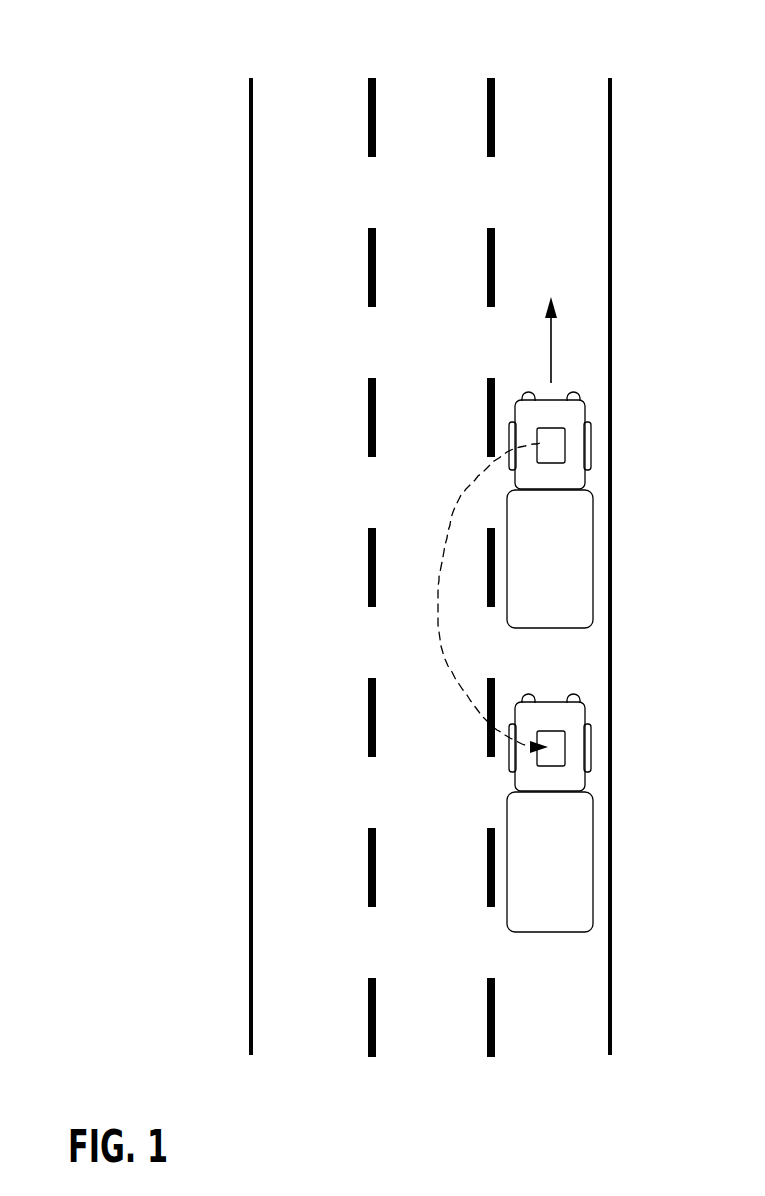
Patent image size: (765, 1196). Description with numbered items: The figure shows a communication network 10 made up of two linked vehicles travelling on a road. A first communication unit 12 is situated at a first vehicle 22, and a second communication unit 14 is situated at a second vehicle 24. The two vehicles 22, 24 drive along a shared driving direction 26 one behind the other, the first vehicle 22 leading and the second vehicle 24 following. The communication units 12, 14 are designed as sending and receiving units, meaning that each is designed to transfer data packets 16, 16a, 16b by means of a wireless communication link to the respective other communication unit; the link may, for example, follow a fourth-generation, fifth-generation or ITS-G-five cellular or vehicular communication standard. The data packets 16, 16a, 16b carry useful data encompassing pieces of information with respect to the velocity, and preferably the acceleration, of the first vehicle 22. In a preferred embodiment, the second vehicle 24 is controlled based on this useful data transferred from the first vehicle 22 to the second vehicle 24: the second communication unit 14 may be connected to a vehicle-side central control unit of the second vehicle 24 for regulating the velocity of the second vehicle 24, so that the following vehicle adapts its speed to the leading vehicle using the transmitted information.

The communication network 10 is at (149, 93).
The first communication unit 12 is at (558, 437).
The second communication unit 14 is at (558, 739).
The data packets 16 is at (384, 567).
The data packet 16a is at (441, 646).
The data packet 16b is at (466, 497).
The first vehicle 22 is at (565, 560).
The second vehicle 24 is at (568, 863).
The shared driving direction 26 is at (551, 356).